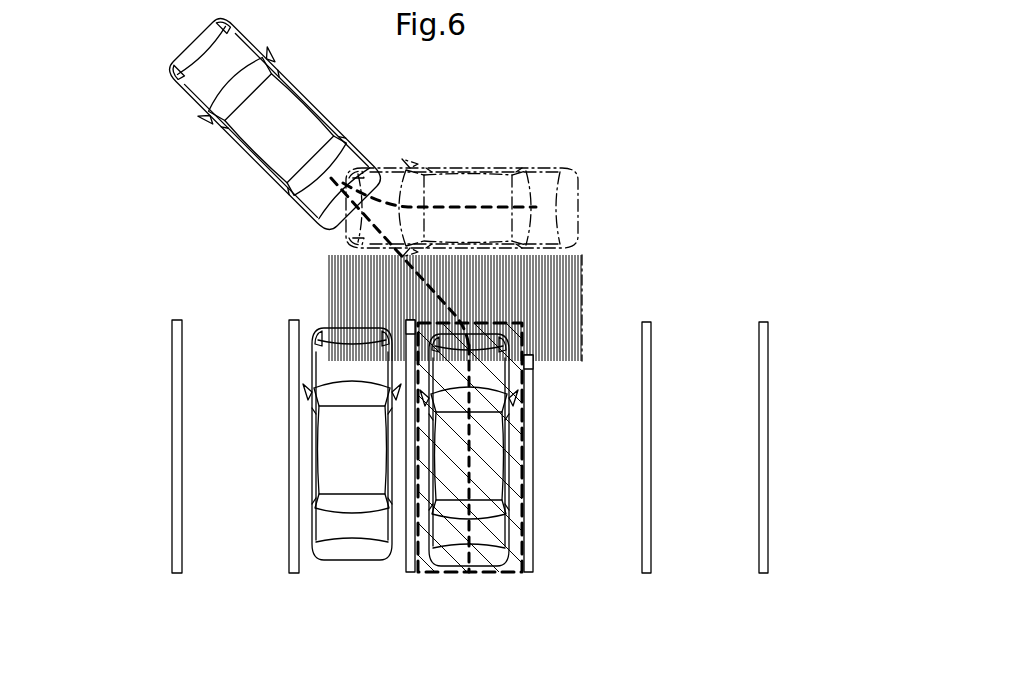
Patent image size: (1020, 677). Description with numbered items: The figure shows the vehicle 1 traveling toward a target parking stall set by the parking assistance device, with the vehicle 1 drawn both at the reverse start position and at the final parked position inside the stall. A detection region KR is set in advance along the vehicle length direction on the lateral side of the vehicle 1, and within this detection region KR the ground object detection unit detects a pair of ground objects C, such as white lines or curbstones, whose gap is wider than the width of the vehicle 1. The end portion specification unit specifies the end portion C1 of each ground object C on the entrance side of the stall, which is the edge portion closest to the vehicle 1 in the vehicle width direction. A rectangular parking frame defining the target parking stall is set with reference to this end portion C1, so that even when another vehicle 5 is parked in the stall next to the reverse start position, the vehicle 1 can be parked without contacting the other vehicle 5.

The vehicle 1 is at (452, 560).
The other vehicle 5 is at (350, 553).
The ground object C is at (534, 512).
The end portion C1 is at (409, 318).
The detection region KR is at (583, 293).